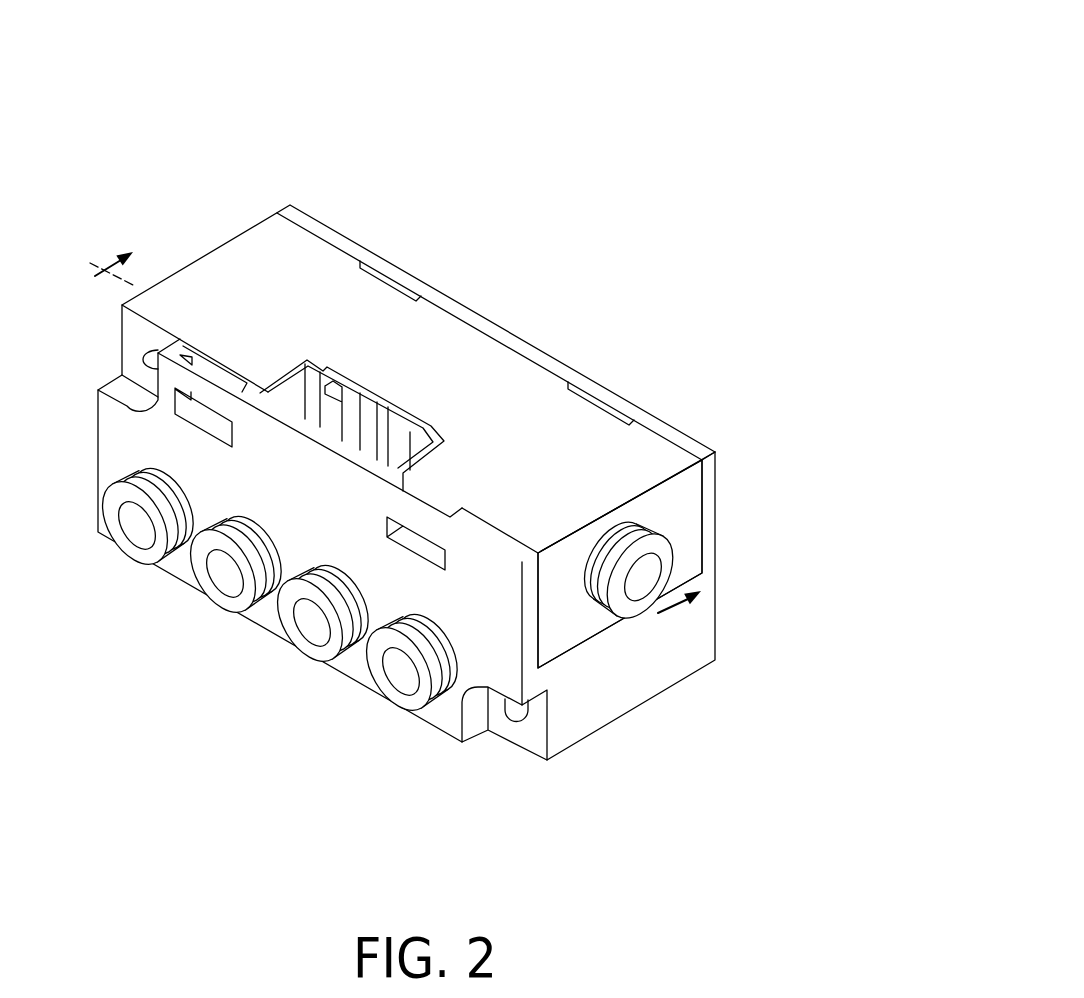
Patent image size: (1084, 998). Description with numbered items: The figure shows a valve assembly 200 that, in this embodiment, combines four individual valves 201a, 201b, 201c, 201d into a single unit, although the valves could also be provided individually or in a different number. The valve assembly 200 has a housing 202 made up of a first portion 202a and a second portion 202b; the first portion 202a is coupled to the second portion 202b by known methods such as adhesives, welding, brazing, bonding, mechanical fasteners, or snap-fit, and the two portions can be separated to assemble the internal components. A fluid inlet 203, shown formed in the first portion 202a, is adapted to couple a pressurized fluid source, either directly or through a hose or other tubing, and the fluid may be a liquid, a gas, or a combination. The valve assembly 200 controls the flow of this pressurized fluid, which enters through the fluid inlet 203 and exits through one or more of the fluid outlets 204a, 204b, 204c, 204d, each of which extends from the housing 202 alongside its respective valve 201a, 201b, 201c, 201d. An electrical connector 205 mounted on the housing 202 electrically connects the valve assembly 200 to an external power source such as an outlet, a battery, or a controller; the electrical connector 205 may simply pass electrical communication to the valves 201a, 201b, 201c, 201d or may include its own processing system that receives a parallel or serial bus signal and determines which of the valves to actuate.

The valve assembly 200 is at (449, 418).
The valve 201a is at (377, 722).
The valve 201b is at (296, 667).
The valve 201c is at (207, 617).
The valve 201d is at (120, 566).
The housing 202 is at (469, 482).
The first portion 202a is at (596, 423).
The second portion 202b is at (704, 641).
The fluid inlet 203 is at (667, 546).
The fluid outlet 204a is at (420, 720).
The fluid outlet 204b is at (333, 665).
The fluid outlet 204c is at (245, 613).
The fluid outlet 204d is at (158, 556).
The electrical connector 205 is at (350, 402).